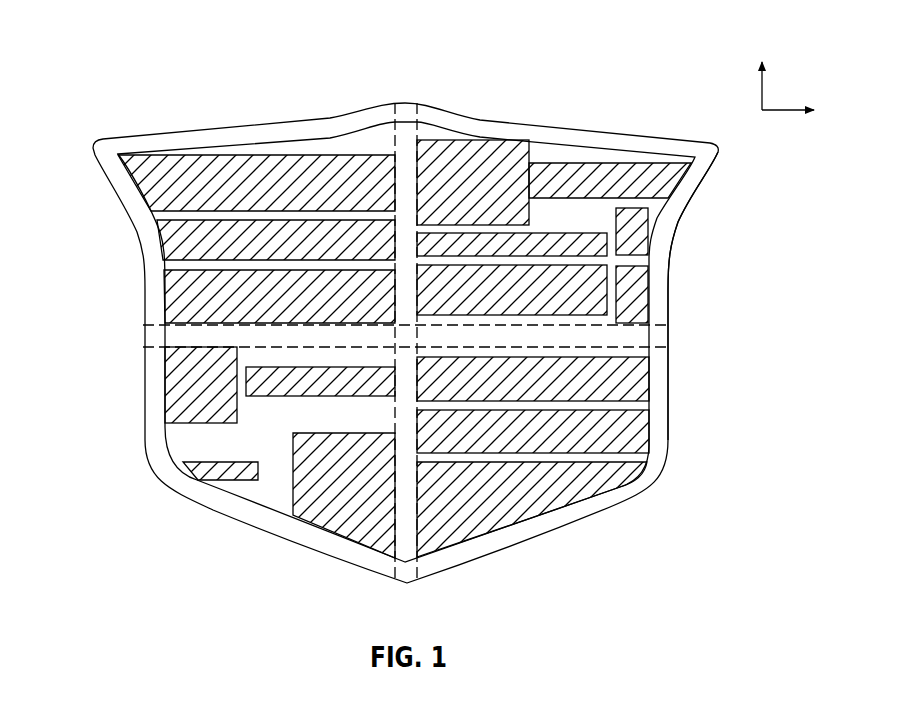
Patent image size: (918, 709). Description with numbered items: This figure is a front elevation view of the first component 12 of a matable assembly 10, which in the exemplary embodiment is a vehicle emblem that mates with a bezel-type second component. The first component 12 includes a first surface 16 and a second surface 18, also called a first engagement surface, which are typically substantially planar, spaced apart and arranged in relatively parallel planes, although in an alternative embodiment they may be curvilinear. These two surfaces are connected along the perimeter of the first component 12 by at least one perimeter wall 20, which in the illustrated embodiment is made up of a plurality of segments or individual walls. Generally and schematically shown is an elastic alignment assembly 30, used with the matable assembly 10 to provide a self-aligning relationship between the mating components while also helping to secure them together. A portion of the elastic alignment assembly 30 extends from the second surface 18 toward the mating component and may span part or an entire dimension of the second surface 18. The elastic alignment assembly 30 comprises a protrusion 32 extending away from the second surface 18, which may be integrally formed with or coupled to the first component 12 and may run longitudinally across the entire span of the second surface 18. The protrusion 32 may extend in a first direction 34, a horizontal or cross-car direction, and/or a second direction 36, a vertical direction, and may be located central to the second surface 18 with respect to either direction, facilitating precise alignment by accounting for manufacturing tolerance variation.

The matable assembly 10 is at (150, 88).
The first component 12 is at (702, 203).
The first surface 16 is at (237, 437).
The second surface 18 is at (140, 213).
The perimeter wall 20 is at (672, 292).
The elastic alignment assembly 30 is at (150, 336).
The protrusion 32 is at (420, 112).
The first direction 34 is at (790, 113).
The second direction 36 is at (760, 82).